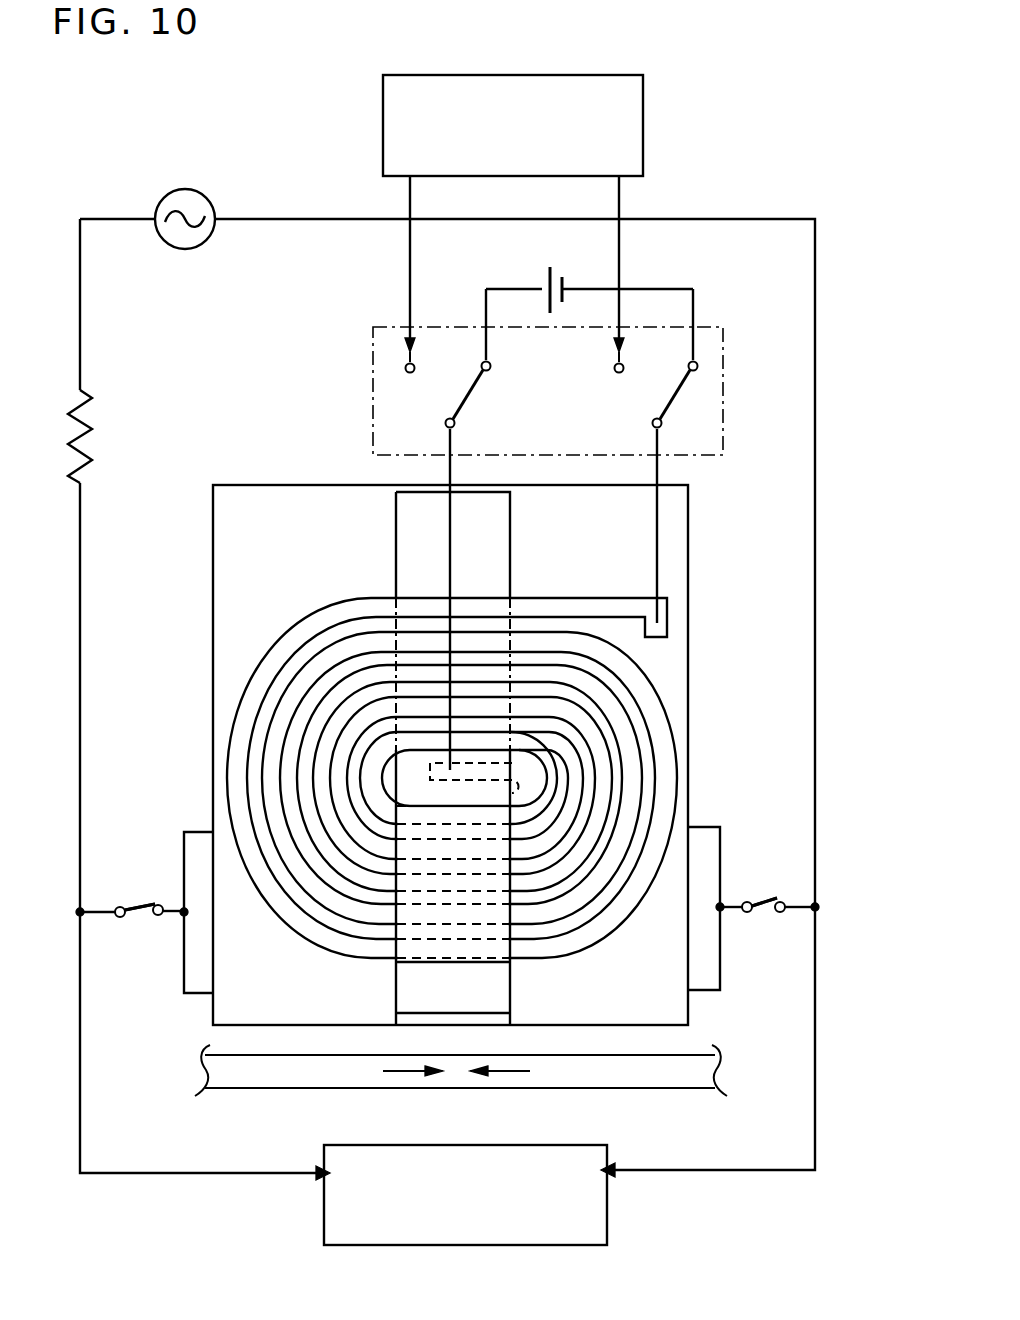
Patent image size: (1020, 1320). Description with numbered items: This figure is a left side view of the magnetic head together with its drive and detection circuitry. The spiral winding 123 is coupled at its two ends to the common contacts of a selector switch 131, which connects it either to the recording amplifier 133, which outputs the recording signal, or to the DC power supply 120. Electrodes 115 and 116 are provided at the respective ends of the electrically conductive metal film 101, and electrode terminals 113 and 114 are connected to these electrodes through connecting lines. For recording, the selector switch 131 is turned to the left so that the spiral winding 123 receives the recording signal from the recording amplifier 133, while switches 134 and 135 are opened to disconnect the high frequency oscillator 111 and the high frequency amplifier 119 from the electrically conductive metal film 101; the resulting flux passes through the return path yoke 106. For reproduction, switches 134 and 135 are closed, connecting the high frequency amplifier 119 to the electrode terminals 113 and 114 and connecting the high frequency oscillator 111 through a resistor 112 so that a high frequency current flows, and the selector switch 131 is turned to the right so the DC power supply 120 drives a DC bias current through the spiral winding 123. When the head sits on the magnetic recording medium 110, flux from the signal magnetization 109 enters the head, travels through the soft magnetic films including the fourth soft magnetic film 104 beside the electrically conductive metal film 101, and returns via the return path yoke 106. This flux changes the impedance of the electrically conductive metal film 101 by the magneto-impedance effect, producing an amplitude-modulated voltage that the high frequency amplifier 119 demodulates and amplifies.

The electrically conductive metal film 101 is at (708, 967).
The fourth soft magnetic film 104 is at (673, 656).
The return path yoke 106 is at (396, 500).
The signal magnetization 109 is at (506, 1073).
The magnetic recording medium 110 is at (352, 1076).
The high frequency oscillator 111 is at (192, 192).
The resistor 112 is at (88, 418).
The electrode terminal 113 is at (158, 916).
The electrode terminal 114 is at (748, 912).
The electrode 115 is at (180, 908).
The electrode 116 is at (727, 900).
The high frequency amplifier 119 is at (557, 1144).
The DC power supply 120 is at (547, 278).
The spiral winding 123 is at (647, 705).
The selector switch 131 is at (373, 385).
The recording amplifier 133 is at (645, 122).
The switch 134 is at (133, 900).
The switch 135 is at (764, 897).